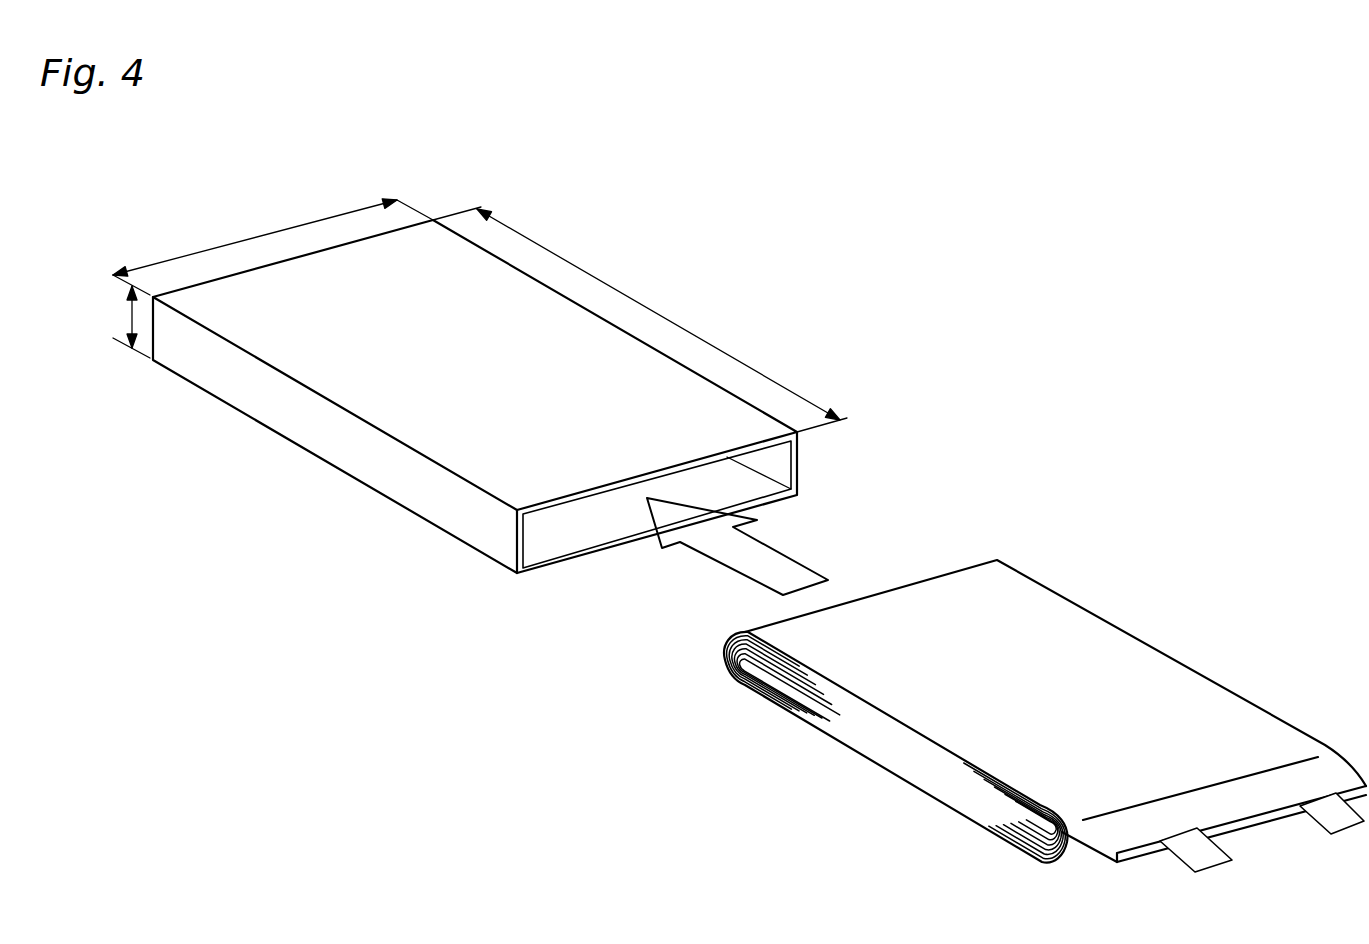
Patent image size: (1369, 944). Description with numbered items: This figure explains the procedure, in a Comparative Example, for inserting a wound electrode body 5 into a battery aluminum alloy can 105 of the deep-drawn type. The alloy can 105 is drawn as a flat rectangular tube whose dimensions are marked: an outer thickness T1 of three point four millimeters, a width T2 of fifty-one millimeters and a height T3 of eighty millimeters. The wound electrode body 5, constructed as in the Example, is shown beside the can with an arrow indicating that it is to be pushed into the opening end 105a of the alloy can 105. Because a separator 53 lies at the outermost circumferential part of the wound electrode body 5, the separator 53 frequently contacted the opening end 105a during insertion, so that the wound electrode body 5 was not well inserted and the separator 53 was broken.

The wound electrode body 5 is at (1045, 712).
The separator 53 is at (1053, 637).
The battery aluminum alloy can 105 is at (352, 447).
The opening end 105a is at (577, 561).
The outer thickness T1 is at (125, 316).
The width T2 is at (258, 238).
The height T3 is at (653, 311).